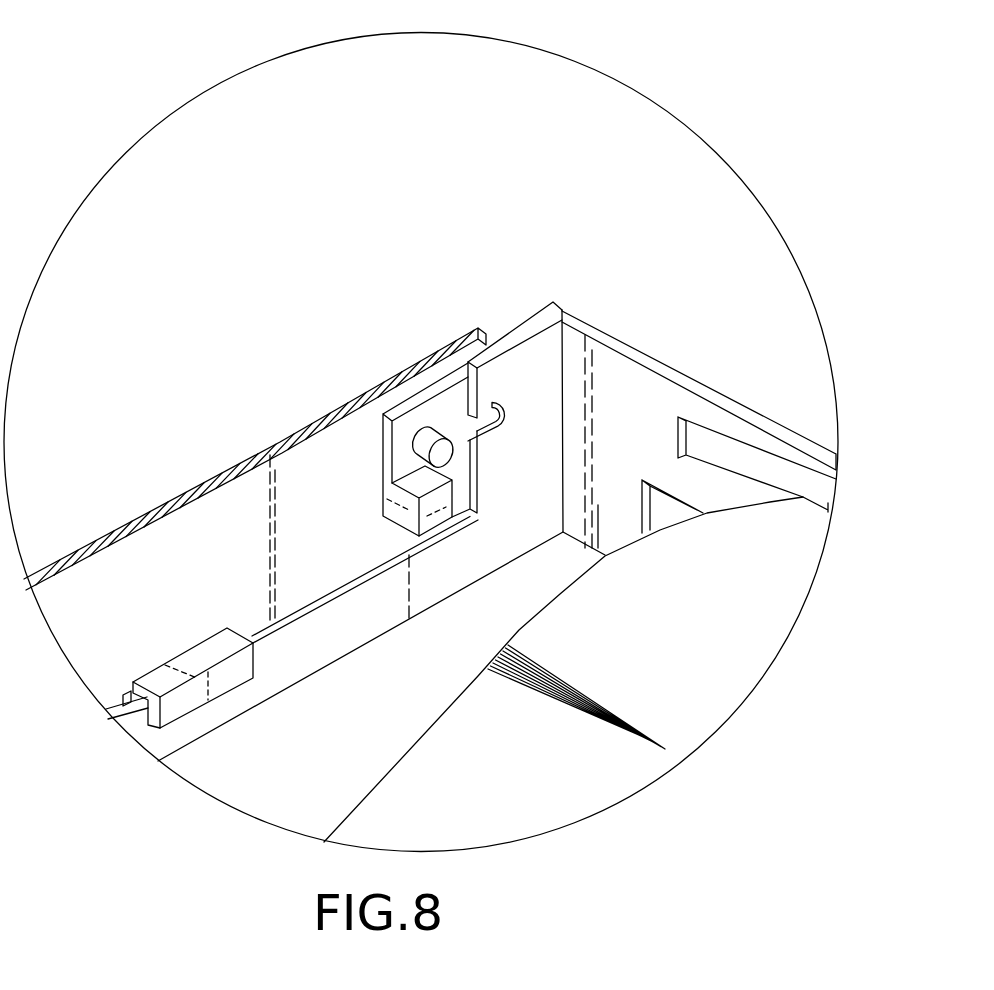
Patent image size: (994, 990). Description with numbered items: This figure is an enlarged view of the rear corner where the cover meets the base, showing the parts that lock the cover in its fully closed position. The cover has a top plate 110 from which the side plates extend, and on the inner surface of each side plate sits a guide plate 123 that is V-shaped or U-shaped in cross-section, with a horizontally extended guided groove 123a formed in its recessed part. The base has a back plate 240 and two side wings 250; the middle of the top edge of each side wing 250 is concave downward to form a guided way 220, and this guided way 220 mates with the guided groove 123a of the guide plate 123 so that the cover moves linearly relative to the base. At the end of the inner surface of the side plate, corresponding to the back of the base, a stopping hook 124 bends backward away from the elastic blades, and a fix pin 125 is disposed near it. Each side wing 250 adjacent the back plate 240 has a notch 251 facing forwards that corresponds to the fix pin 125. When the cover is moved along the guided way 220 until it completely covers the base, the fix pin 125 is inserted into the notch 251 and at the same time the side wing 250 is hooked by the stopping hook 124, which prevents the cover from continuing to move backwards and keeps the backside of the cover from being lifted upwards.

The top plate 110 is at (657, 682).
The guide plate 123 is at (238, 672).
The guided groove 123a is at (148, 706).
The stopping hook 124 is at (431, 504).
The fix pin 125 is at (440, 447).
The guided way 220 is at (324, 635).
The back plate 240 is at (630, 368).
The side wing 250 is at (548, 353).
The notch 251 is at (490, 410).